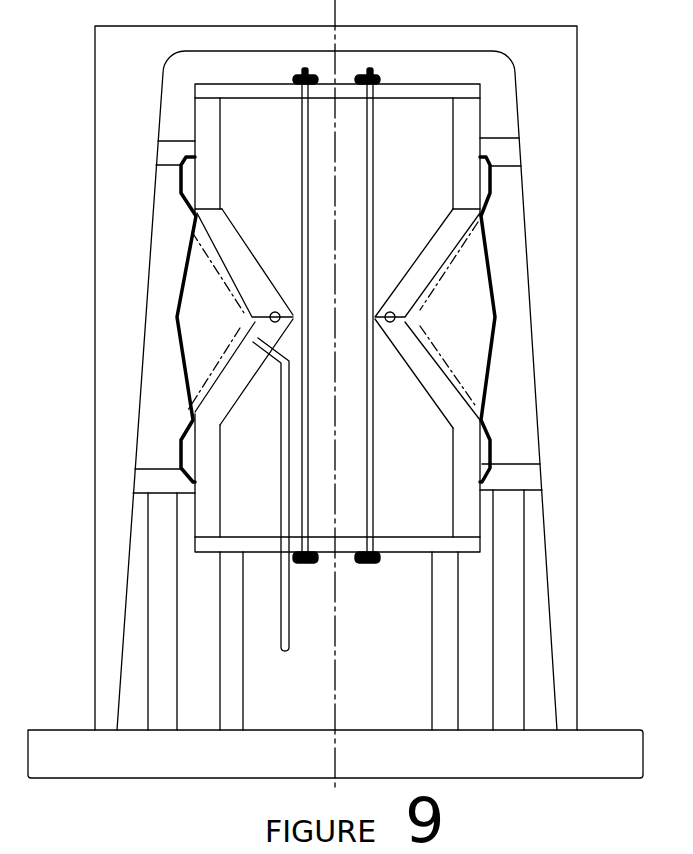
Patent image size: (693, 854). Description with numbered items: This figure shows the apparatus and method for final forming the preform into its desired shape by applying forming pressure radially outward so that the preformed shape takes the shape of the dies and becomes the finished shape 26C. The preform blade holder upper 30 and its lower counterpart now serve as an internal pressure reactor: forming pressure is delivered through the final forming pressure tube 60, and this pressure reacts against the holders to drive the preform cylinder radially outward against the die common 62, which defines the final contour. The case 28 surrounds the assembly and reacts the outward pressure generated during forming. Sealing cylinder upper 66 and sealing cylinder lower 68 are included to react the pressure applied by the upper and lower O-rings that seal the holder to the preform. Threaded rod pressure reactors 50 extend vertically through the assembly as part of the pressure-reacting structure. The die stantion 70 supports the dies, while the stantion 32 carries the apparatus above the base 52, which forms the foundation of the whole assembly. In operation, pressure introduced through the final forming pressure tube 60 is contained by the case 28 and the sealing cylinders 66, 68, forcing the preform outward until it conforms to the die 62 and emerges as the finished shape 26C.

The case 28 is at (95, 212).
The preform blade holder upper 30 is at (480, 128).
The sealing cylinder upper 66 is at (510, 150).
The threaded rod pressure reactors 50 is at (303, 210).
The finished shape 26C is at (495, 287).
The die common 62 is at (508, 353).
The final forming pressure tube 60 is at (282, 483).
The sealing cylinder lower 68 is at (522, 472).
The die stantion 70 is at (523, 572).
The stantion 32 is at (430, 683).
The base 52 is at (585, 730).